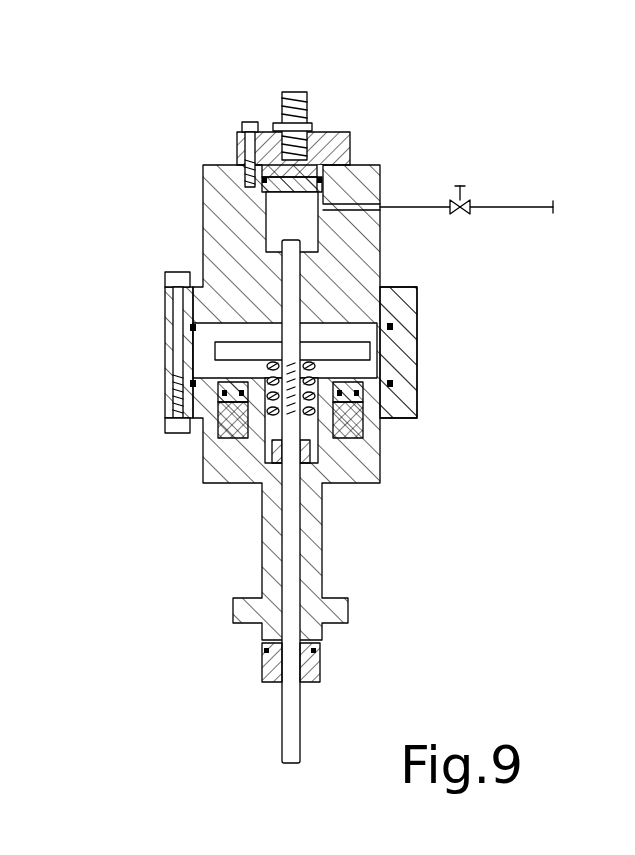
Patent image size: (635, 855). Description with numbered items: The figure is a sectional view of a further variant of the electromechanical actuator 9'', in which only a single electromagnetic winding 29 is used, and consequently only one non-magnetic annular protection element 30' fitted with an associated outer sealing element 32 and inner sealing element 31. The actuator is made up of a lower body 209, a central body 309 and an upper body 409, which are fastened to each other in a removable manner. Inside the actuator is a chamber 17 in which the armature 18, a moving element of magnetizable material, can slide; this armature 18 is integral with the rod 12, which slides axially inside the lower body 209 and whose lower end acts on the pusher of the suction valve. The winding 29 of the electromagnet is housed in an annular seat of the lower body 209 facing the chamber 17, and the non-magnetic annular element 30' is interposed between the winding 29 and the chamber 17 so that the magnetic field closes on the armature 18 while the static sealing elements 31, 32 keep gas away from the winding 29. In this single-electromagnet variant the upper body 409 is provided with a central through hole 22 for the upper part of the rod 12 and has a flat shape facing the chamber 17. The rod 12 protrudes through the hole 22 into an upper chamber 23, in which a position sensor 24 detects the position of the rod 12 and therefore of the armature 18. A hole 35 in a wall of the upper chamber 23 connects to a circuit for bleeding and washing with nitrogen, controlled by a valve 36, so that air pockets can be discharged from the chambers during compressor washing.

The electromechanical actuator 9'' is at (118, 322).
The rod 12 is at (288, 715).
The chamber 17 is at (340, 332).
The armature 18 is at (252, 350).
The through hole 22 is at (307, 288).
The upper chamber 23 is at (280, 215).
The position sensor 24 is at (305, 93).
The winding 29 is at (322, 420).
The non-magnetic annular protection element 30' is at (436, 390).
The inner sealing element 31 is at (385, 369).
The outer sealing element 32 is at (357, 393).
The hole 35 is at (353, 203).
The valve 36 is at (462, 199).
The lower body 209 is at (217, 462).
The central body 309 is at (409, 349).
The upper body 409 is at (215, 187).